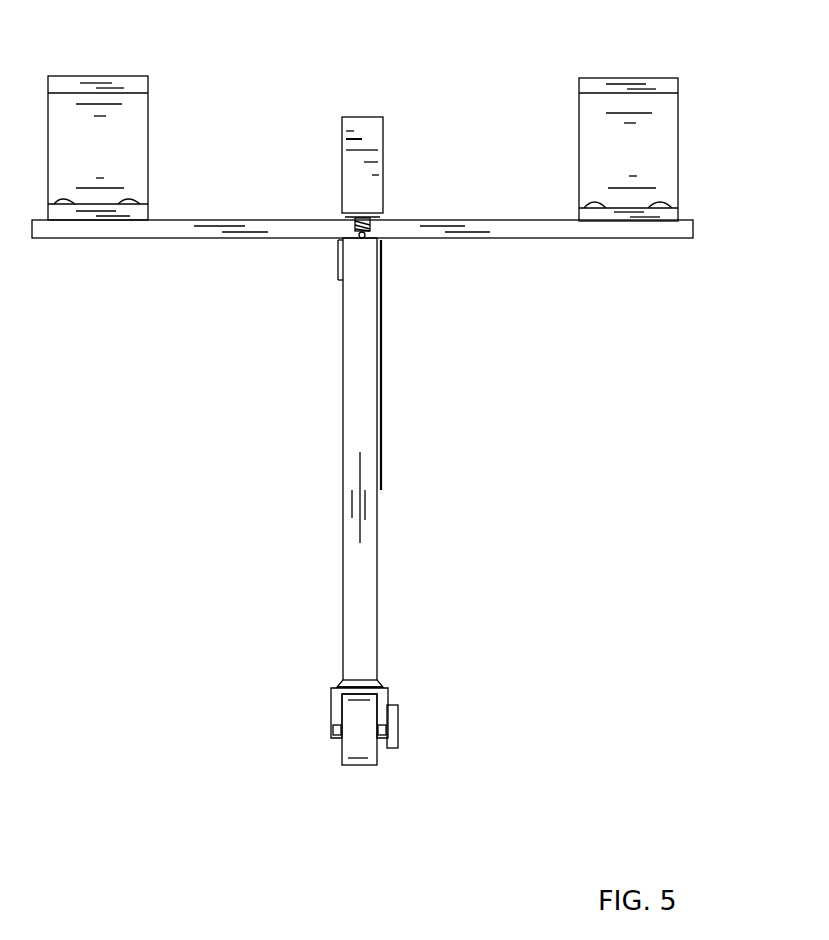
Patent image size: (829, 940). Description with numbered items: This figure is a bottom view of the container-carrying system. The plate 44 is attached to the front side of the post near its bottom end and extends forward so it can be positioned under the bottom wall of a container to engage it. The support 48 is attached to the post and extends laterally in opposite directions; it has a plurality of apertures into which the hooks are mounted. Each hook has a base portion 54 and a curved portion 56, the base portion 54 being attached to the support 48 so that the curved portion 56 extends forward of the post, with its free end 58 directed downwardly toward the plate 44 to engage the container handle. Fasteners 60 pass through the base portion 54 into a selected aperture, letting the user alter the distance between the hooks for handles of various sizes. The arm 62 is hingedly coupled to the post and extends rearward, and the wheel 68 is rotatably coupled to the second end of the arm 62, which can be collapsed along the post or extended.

The plate 44 is at (373, 143).
The support 48 is at (672, 231).
The base portion 54 is at (667, 212).
The curved portion 56 is at (658, 137).
The free end 58 is at (650, 82).
The fasteners 60 is at (130, 203).
The arm 62 is at (362, 583).
The wheel 68 is at (363, 750).